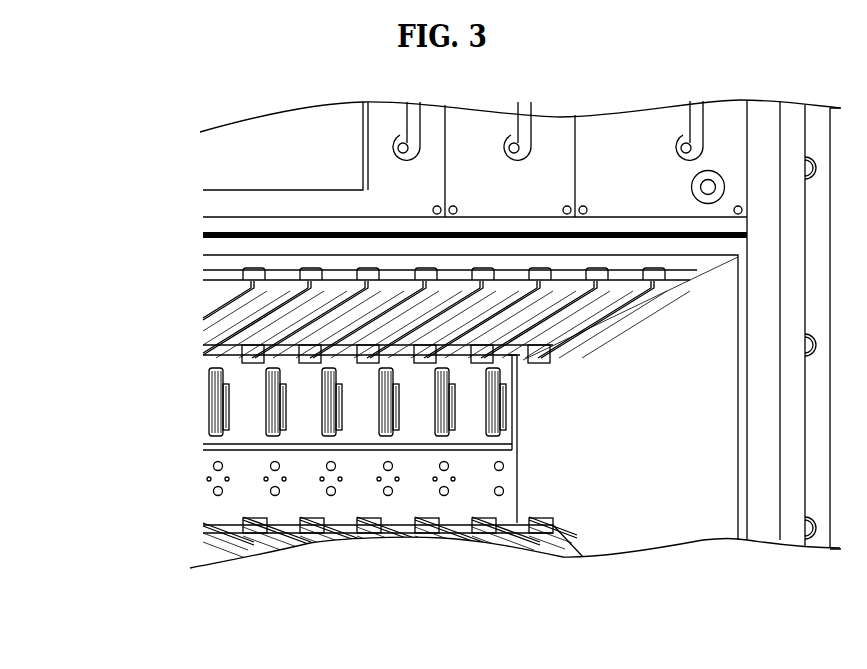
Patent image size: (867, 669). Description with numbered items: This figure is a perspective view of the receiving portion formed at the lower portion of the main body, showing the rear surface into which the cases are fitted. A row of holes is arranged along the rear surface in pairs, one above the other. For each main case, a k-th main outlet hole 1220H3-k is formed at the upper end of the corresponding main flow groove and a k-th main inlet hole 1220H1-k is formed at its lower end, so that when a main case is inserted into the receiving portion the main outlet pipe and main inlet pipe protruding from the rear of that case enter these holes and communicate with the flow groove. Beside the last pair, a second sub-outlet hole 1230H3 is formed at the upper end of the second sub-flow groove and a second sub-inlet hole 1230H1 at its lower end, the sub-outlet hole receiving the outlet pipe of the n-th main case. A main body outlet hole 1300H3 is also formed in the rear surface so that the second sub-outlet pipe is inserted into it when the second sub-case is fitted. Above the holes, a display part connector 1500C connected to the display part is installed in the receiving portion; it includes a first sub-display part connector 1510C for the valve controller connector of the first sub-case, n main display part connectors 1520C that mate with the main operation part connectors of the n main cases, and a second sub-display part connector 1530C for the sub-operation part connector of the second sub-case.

The display part connector 1500C is at (107, 167).
The first sub-display part connector 1510C is at (403, 263).
The main display part connectors 1520C is at (580, 433).
The second sub-display part connector 1530C is at (580, 385).
The k-th main outlet hole 1220H3-k is at (214, 468).
The k-th main inlet hole 1220H1-k is at (270, 491).
The second sub-outlet hole 1230H3 is at (441, 469).
The main body outlet hole 1300H3 is at (504, 466).
The second sub-inlet hole 1230H1 is at (504, 491).